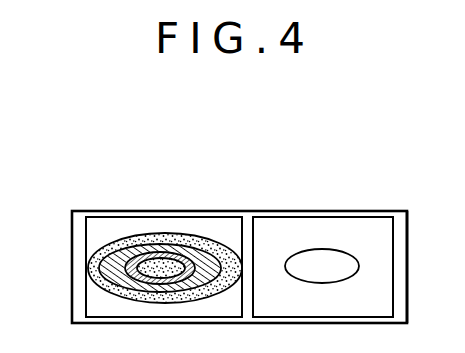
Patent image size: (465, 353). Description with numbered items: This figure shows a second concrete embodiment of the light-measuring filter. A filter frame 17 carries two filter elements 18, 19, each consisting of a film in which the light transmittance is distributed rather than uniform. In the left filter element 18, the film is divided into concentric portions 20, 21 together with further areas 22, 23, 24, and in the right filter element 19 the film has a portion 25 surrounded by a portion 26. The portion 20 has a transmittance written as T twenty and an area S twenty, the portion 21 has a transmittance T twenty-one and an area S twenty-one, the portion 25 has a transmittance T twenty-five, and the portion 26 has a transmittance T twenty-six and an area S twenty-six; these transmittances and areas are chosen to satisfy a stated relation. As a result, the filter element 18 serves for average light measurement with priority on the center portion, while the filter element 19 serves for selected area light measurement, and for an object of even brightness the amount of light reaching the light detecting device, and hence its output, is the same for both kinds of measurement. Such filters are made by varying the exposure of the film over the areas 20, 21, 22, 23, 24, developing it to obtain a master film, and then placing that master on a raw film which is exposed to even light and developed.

The filter frame 17 is at (72, 211).
The filter element 18 is at (97, 215).
The filter element 19 is at (378, 212).
The portion 20 is at (148, 243).
The portion 21 is at (174, 243).
The area 22 is at (188, 248).
The area 23 is at (213, 232).
The area 24 is at (240, 220).
The portion 25 is at (320, 262).
The portion 26 is at (346, 227).